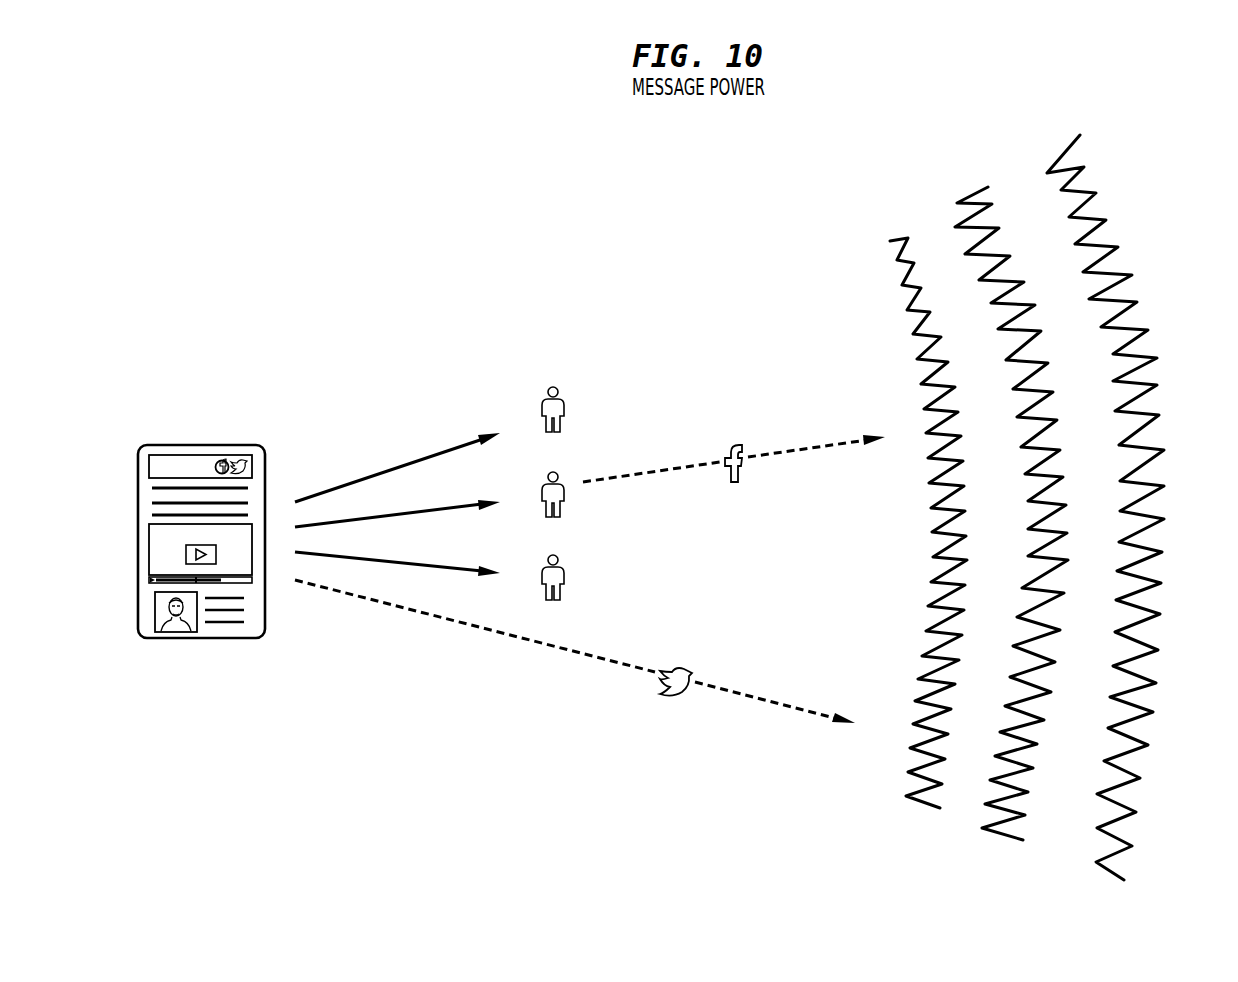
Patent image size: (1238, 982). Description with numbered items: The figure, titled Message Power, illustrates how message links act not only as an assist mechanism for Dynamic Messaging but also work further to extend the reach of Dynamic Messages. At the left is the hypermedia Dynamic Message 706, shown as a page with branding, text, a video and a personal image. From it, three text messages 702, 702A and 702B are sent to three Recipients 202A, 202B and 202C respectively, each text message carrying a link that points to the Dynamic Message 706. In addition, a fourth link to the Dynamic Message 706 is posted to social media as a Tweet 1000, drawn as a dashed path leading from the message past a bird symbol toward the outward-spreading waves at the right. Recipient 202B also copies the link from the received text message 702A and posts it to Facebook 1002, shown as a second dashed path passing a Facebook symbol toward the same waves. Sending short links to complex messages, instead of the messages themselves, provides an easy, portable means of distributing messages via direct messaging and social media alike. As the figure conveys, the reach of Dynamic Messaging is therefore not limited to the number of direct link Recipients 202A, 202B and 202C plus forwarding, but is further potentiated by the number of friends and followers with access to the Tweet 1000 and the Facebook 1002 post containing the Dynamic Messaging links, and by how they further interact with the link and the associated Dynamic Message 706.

The Dynamic Message 706 is at (208, 462).
The text message 702 is at (397, 467).
The text message 702A is at (397, 504).
The text message 702B is at (397, 556).
The Recipient 202A is at (553, 425).
The Recipient 202B is at (553, 510).
The Recipient 202C is at (553, 594).
The Facebook 1002 is at (745, 443).
The Tweet 1000 is at (692, 672).